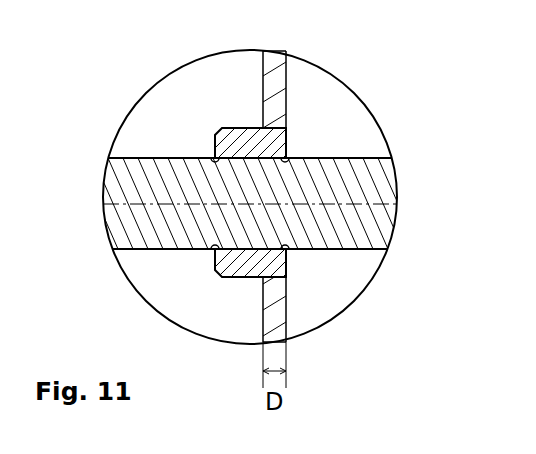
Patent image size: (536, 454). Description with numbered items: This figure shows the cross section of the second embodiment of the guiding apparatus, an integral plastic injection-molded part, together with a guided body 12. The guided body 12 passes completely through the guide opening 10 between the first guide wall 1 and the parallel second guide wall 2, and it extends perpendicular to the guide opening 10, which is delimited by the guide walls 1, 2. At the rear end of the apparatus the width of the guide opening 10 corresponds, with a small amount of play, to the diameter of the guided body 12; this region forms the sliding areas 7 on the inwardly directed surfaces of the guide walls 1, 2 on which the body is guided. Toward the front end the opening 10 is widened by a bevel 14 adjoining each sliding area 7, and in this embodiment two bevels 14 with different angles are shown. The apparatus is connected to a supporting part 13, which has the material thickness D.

The first guide wall 1 is at (243, 137).
The second guide wall 2 is at (237, 270).
The sliding area 7 is at (208, 154).
The guide opening 10 is at (302, 250).
The guided body 12 is at (370, 183).
The supporting part 13 is at (273, 73).
The bevel 14 is at (289, 155).